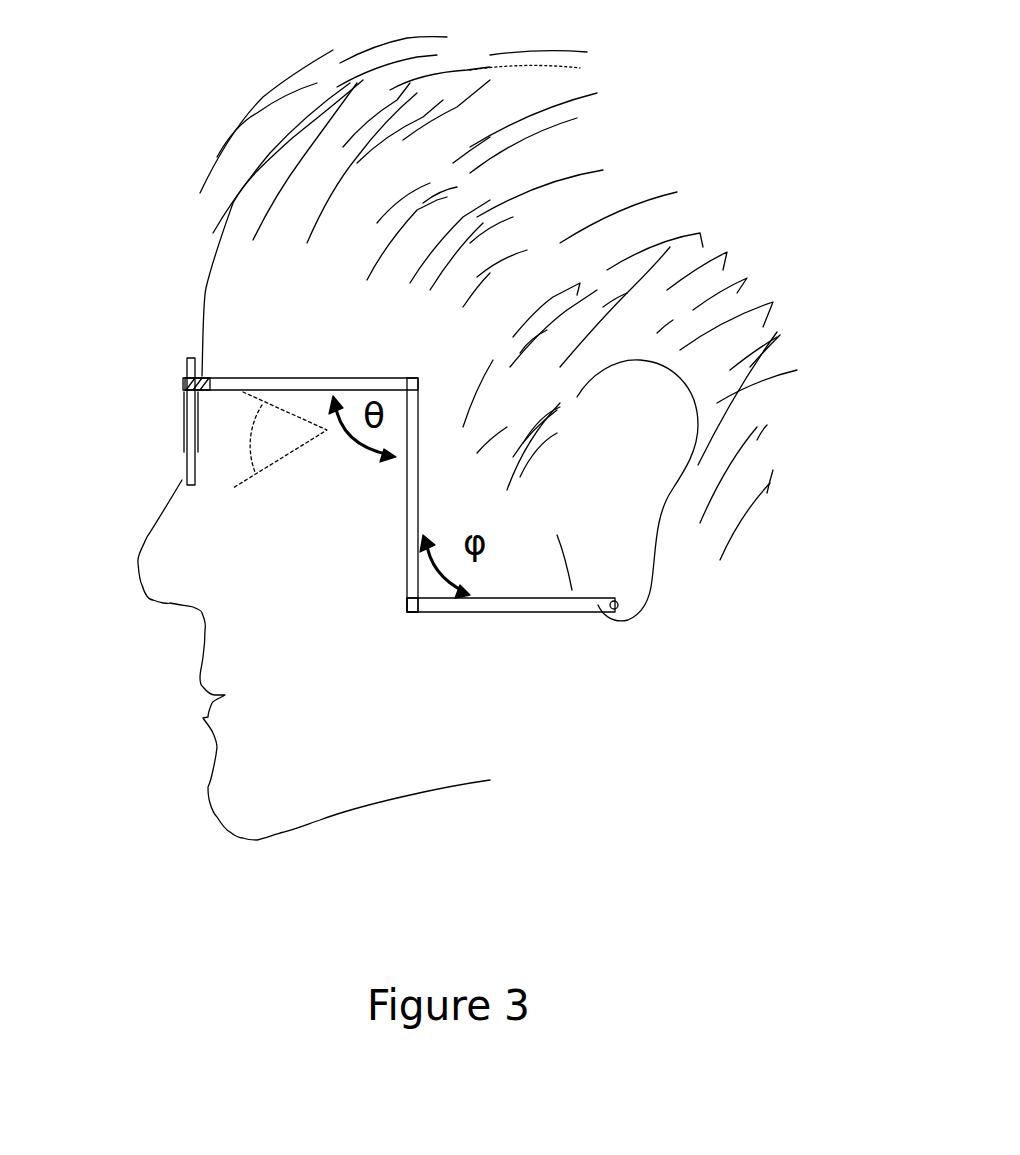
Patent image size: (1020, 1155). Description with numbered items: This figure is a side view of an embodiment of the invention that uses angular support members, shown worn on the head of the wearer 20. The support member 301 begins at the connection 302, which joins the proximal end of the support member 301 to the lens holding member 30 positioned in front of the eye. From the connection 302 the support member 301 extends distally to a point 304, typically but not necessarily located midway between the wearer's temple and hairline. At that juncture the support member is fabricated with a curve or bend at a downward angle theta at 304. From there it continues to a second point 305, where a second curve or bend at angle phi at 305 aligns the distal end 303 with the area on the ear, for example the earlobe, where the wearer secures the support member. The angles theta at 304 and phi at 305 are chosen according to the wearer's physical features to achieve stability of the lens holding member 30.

The user's head 20 is at (417, 768).
The display element 30 is at (180, 409).
The support member 301 is at (410, 510).
The connection 302 is at (200, 377).
The distal end 303 is at (618, 608).
The point 304 is at (413, 380).
The second point 305 is at (407, 607).